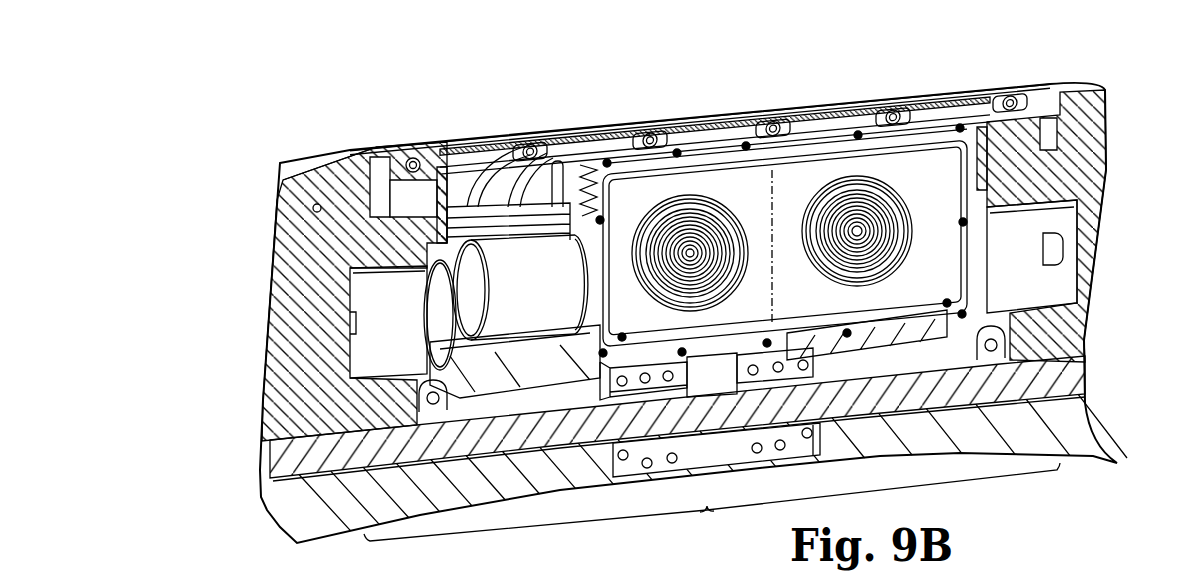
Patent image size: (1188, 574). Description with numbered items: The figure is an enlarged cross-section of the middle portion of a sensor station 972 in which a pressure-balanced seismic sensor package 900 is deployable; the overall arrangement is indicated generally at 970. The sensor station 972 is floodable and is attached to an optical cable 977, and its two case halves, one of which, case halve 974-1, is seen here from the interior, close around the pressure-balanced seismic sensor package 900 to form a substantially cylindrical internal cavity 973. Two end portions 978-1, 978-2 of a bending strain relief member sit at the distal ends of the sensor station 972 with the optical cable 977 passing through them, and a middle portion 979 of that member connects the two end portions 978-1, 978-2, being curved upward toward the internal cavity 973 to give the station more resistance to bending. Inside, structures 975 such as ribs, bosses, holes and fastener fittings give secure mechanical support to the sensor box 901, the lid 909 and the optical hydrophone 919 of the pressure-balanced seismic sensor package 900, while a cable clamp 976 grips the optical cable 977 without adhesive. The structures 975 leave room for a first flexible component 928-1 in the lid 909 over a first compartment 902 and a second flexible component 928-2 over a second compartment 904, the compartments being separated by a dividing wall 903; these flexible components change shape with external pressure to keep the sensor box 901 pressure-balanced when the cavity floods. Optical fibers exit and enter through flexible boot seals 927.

The lighting device assembly 970 is at (291, 88).
The sensor station 972 is at (250, 300).
The internal cavity 973 is at (505, 172).
The flexible boot seals 927 is at (590, 165).
The case halve 974-1 is at (612, 120).
The second flexible component 928-2 is at (688, 190).
The first flexible component 928-1 is at (857, 172).
The sensor box 901 is at (806, 141).
The pressure-balanced seismic sensor package 900 is at (922, 146).
The lid 909 is at (656, 208).
The dividing wall 903 is at (773, 213).
The second compartment 904 is at (707, 335).
The first compartment 902 is at (870, 318).
The optical hydrophone 919 is at (547, 300).
The end portion of the BSR member 978-1 is at (297, 370).
The end portion of the BSR member 978-2 is at (1053, 333).
The cable clamp 976 is at (800, 368).
The structures 975 is at (585, 440).
The optical cable 977 is at (540, 433).
The middle portion of the BSR member 979 is at (712, 504).